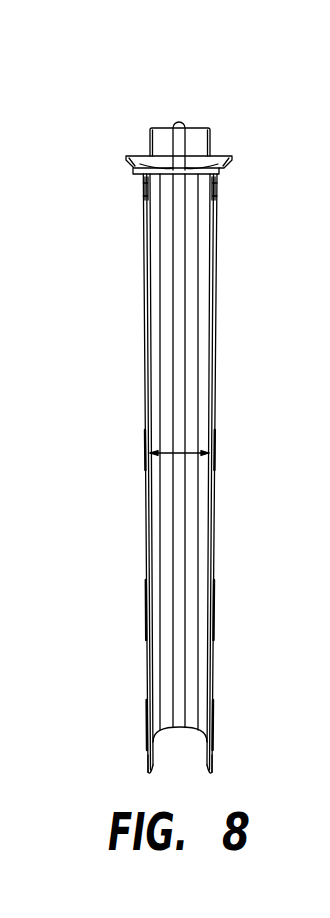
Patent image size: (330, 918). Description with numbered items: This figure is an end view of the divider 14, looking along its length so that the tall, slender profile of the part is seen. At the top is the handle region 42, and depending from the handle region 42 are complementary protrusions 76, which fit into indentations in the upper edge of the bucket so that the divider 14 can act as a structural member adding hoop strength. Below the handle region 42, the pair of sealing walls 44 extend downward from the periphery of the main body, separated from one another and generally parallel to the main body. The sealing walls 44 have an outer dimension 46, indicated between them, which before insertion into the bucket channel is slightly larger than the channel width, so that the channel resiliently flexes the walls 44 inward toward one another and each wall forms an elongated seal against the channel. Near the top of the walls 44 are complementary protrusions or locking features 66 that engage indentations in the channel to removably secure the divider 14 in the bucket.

The divider 14 is at (212, 103).
The handle region 42 is at (200, 140).
The complementary protrusion 76 is at (126, 162).
The complementary protrusion or locking feature 66 is at (143, 196).
The outer dimension 46 is at (178, 453).
The sealing walls 44 is at (148, 757).